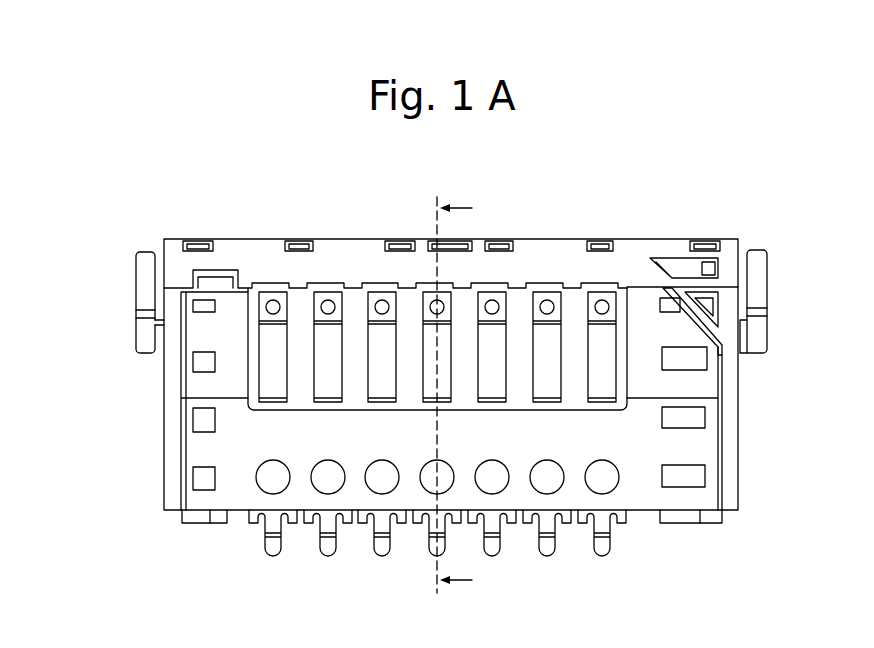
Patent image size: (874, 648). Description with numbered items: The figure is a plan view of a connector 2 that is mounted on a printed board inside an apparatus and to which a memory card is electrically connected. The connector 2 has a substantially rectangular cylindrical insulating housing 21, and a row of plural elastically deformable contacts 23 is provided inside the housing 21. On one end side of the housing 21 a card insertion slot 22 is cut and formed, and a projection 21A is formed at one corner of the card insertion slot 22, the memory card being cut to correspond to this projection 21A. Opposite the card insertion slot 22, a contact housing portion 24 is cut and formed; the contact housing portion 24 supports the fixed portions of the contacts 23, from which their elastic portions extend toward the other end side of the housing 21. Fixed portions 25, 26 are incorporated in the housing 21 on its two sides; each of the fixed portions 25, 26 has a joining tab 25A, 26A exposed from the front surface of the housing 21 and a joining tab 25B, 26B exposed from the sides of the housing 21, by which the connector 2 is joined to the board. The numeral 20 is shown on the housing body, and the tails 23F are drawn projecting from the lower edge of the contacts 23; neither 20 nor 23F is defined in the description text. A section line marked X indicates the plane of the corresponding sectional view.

The connector 2 is at (46, 226).
The housing 20 is at (174, 430).
The housing 21 is at (558, 256).
The projection 21A is at (723, 378).
The card insertion slot 22 is at (720, 445).
The contact 23 is at (493, 343).
The terminal portion of contact 23F is at (492, 556).
The contact housing portion 24 is at (355, 293).
The fixed portion 25 is at (683, 523).
The joining tab 25A is at (758, 278).
The joining tab 25B is at (710, 523).
The fixed portion 26 is at (202, 523).
The joining tab 26A is at (141, 289).
The joining tab 26B is at (217, 523).